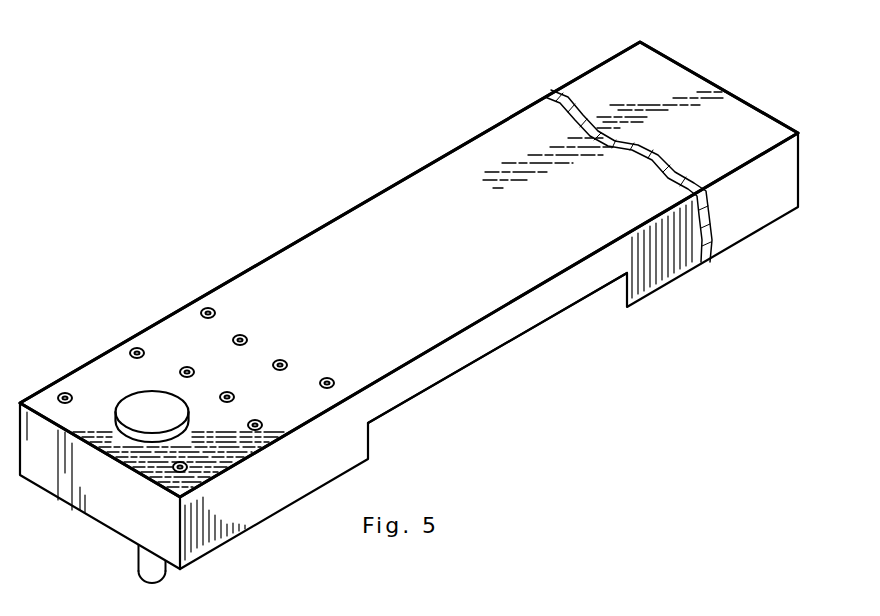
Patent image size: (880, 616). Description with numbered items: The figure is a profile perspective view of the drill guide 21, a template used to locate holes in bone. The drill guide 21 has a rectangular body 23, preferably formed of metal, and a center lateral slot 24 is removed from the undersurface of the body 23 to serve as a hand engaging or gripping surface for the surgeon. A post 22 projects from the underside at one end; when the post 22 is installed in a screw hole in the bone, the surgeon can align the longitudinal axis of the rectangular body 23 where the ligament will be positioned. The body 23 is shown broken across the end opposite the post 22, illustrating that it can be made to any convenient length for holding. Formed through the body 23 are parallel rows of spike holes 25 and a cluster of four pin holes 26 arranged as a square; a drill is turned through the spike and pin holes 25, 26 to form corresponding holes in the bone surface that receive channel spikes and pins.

The drill guide 21 is at (392, 146).
The post 22 is at (137, 552).
The rectangular body 23 is at (486, 243).
The center lateral slot 24 is at (537, 330).
The spike holes 25 is at (202, 313).
The pin holes 26 is at (191, 367).